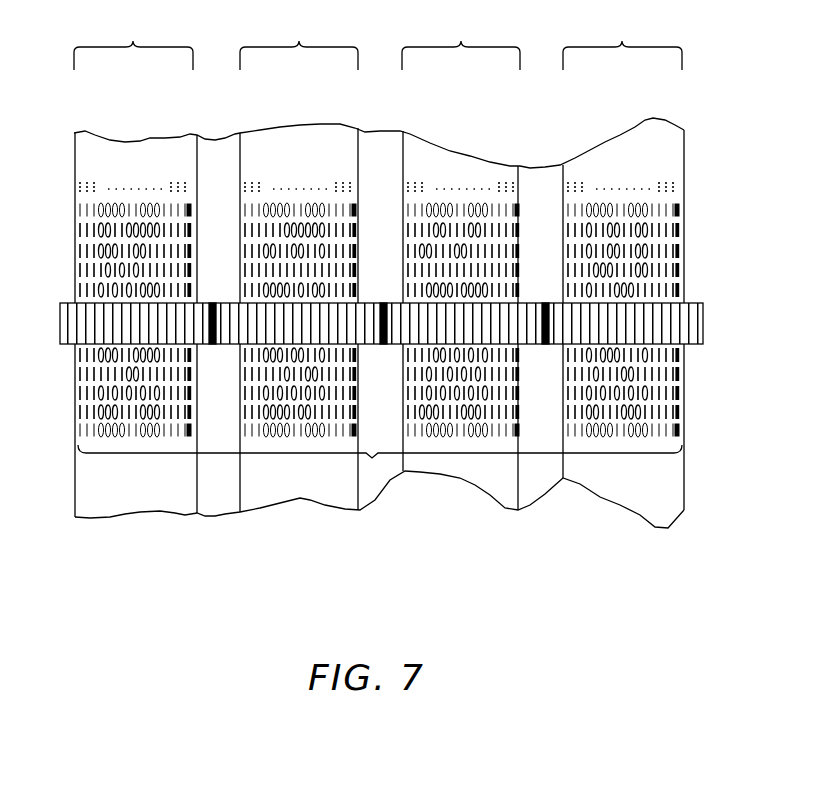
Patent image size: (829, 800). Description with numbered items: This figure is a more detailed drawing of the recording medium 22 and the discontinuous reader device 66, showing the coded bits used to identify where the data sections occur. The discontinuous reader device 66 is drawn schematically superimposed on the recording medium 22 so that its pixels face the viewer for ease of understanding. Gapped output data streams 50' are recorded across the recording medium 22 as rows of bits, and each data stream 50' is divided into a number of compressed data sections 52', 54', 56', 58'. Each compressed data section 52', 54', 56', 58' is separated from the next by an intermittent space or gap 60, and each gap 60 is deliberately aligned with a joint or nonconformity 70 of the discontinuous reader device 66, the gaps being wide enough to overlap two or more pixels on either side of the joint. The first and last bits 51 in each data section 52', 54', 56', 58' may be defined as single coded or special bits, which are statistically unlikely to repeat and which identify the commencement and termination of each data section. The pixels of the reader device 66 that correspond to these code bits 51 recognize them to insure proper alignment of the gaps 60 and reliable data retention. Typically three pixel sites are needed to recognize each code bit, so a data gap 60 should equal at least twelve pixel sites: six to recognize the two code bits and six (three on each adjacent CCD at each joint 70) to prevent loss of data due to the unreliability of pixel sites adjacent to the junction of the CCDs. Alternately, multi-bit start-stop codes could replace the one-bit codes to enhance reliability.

The recording medium 22 is at (684, 172).
The gapped output data stream 50' is at (380, 464).
The first and last bits 51 is at (82, 430).
The compressed data section 52' is at (133, 42).
The compressed data section 54' is at (299, 42).
The compressed data section 56' is at (461, 42).
The compressed data section 58' is at (622, 42).
The gap 60 is at (231, 182).
The discontinuous reader device 66 is at (703, 324).
The joint or nonconformity 70 is at (222, 286).